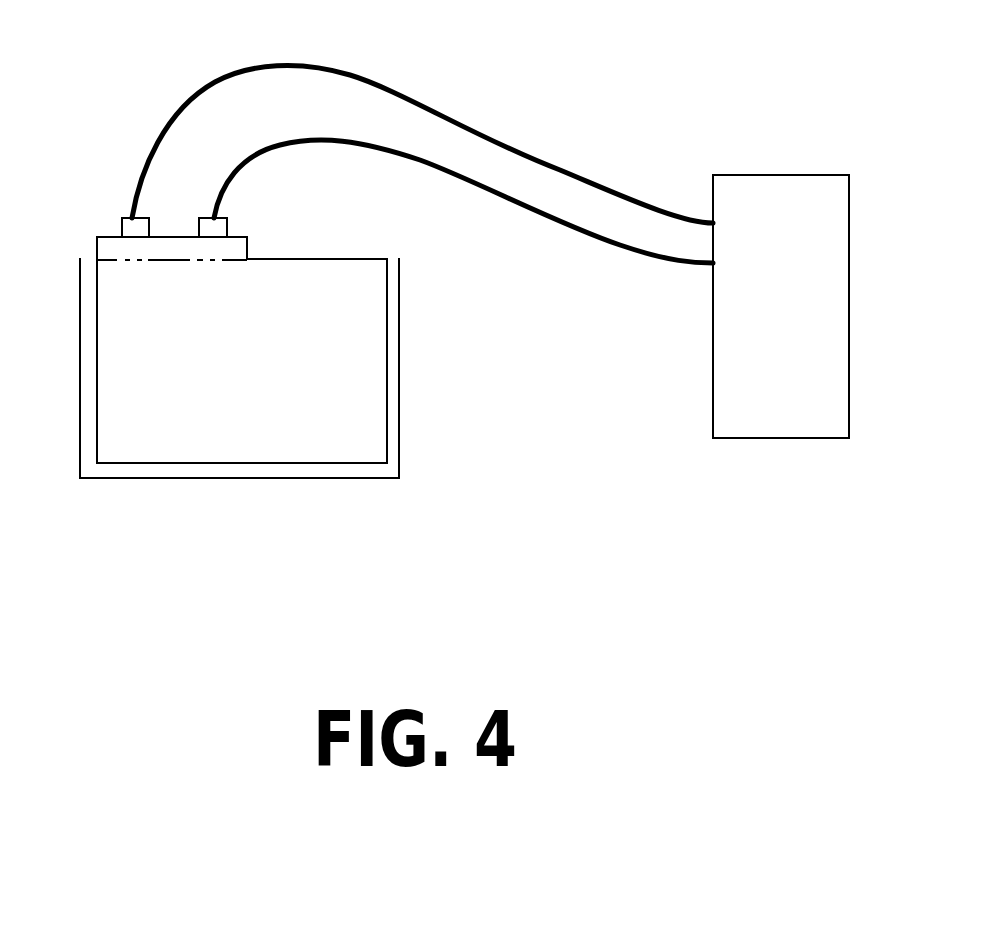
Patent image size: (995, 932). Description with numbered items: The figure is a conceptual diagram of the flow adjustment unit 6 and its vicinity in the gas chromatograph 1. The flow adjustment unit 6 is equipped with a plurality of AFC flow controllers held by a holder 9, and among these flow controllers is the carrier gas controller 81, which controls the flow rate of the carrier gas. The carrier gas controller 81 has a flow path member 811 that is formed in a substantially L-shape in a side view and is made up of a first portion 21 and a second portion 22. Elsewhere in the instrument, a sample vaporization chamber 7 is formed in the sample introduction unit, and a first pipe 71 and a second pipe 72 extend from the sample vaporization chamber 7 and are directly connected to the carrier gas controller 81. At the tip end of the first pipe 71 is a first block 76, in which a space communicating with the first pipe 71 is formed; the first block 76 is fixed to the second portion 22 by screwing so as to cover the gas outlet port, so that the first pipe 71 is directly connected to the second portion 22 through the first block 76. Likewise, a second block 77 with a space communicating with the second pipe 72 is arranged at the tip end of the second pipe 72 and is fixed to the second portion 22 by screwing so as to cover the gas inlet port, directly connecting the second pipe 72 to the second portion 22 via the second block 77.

The gas chromatograph 1 is at (578, 122).
The flow adjustment unit 6 is at (373, 492).
The sample vaporization chamber 7 is at (760, 438).
The holder 9 is at (399, 365).
The first portion 21 is at (133, 447).
The second portion 22 is at (232, 250).
The first pipe 71 is at (427, 108).
The second pipe 72 is at (493, 193).
The first block 76 is at (120, 228).
The second block 77 is at (228, 226).
The carrier gas controller 81 is at (283, 463).
The flow path member 811 is at (195, 463).